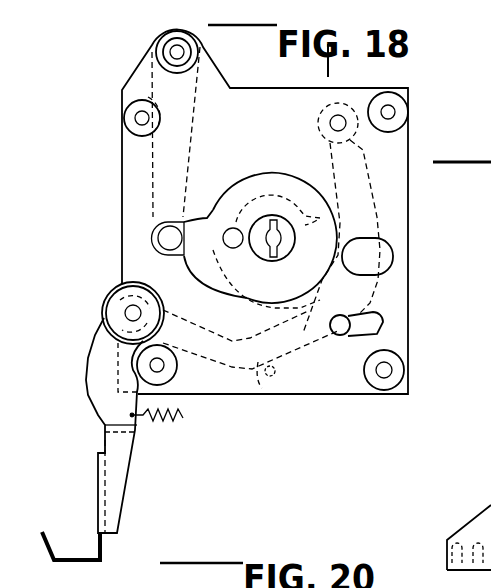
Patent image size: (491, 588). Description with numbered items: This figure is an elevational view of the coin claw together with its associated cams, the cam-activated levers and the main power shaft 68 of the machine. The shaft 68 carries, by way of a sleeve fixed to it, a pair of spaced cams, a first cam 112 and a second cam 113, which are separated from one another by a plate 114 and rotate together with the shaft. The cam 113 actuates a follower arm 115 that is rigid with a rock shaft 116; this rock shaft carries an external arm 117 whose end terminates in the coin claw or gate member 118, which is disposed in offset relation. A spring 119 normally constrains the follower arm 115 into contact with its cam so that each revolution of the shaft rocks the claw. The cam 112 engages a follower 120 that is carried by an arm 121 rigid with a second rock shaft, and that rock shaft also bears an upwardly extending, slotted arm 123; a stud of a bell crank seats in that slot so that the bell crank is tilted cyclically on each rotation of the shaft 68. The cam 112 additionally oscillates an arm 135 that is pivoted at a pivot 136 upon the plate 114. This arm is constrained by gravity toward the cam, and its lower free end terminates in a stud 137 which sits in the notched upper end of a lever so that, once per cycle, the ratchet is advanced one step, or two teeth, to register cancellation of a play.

The shaft 68 is at (283, 238).
The cam 112 is at (248, 186).
The cam 113 is at (251, 343).
The plate 114 is at (393, 147).
The follower arm 115 is at (221, 366).
The rock shaft 116 is at (125, 316).
The external arm 117 is at (95, 382).
The coin claw 118 is at (64, 557).
The spring 119 is at (173, 424).
The follower 120 is at (158, 237).
The arm 121 is at (150, 175).
The upwardly extending arm 123 is at (177, 52).
The arm 135 is at (370, 254).
The pivot 136 is at (338, 123).
The stud 137 is at (270, 377).